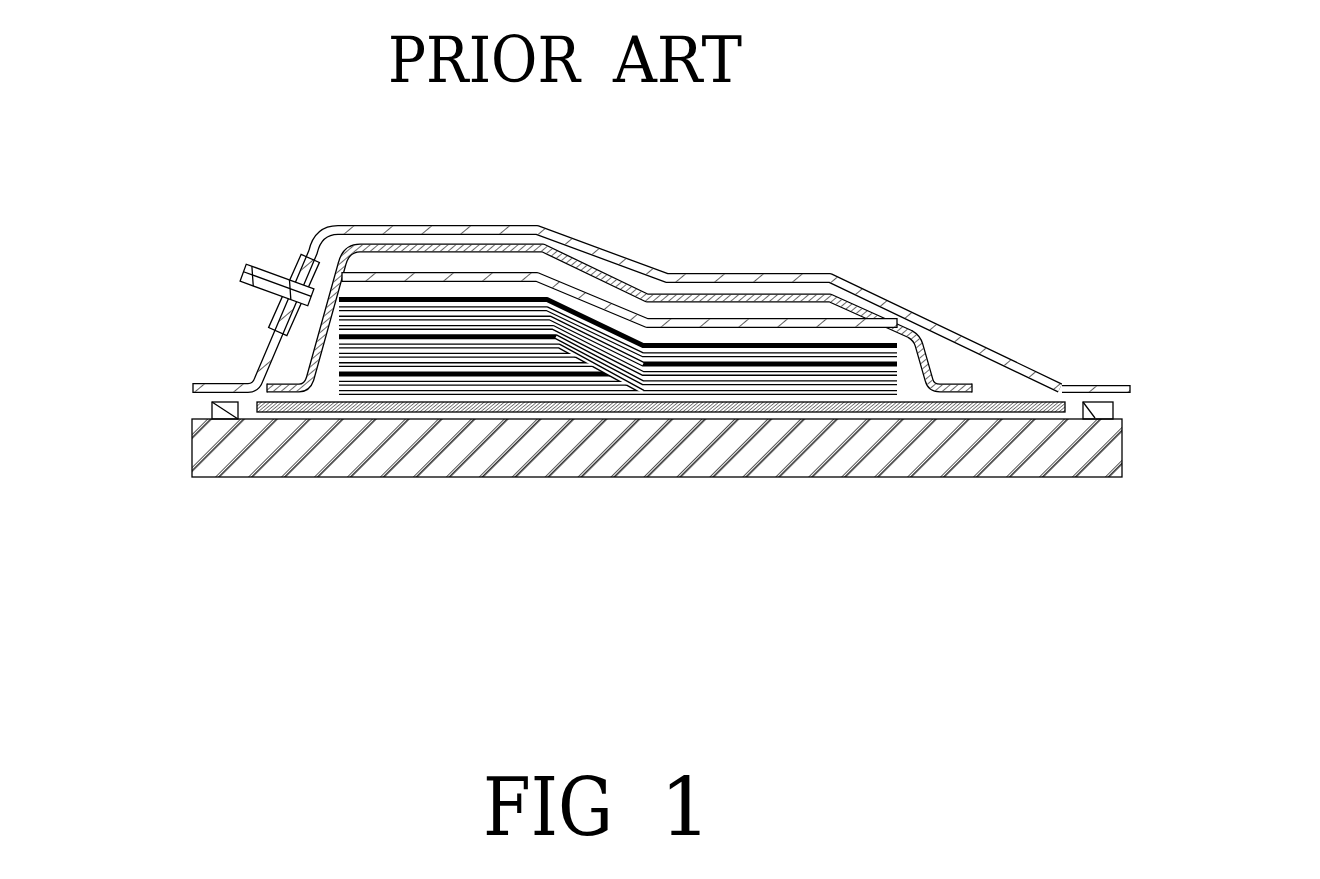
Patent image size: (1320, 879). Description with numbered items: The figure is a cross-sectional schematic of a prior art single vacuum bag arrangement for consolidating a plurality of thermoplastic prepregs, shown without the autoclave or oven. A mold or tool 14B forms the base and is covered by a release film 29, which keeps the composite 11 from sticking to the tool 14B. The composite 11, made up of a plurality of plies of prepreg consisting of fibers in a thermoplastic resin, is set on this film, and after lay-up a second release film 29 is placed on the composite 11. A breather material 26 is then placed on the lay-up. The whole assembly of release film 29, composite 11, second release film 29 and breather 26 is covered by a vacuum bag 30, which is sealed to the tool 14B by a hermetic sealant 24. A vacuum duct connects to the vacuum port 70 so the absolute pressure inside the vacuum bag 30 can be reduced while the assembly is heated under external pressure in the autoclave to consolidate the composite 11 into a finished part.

The vacuum port 70 is at (245, 266).
The composite 11 is at (331, 374).
The hermetic sealant 24 is at (212, 412).
The breather material 26 is at (957, 387).
The release film 29 is at (847, 340).
The vacuum bag 30 is at (832, 274).
The mold or tool 14B is at (1038, 470).